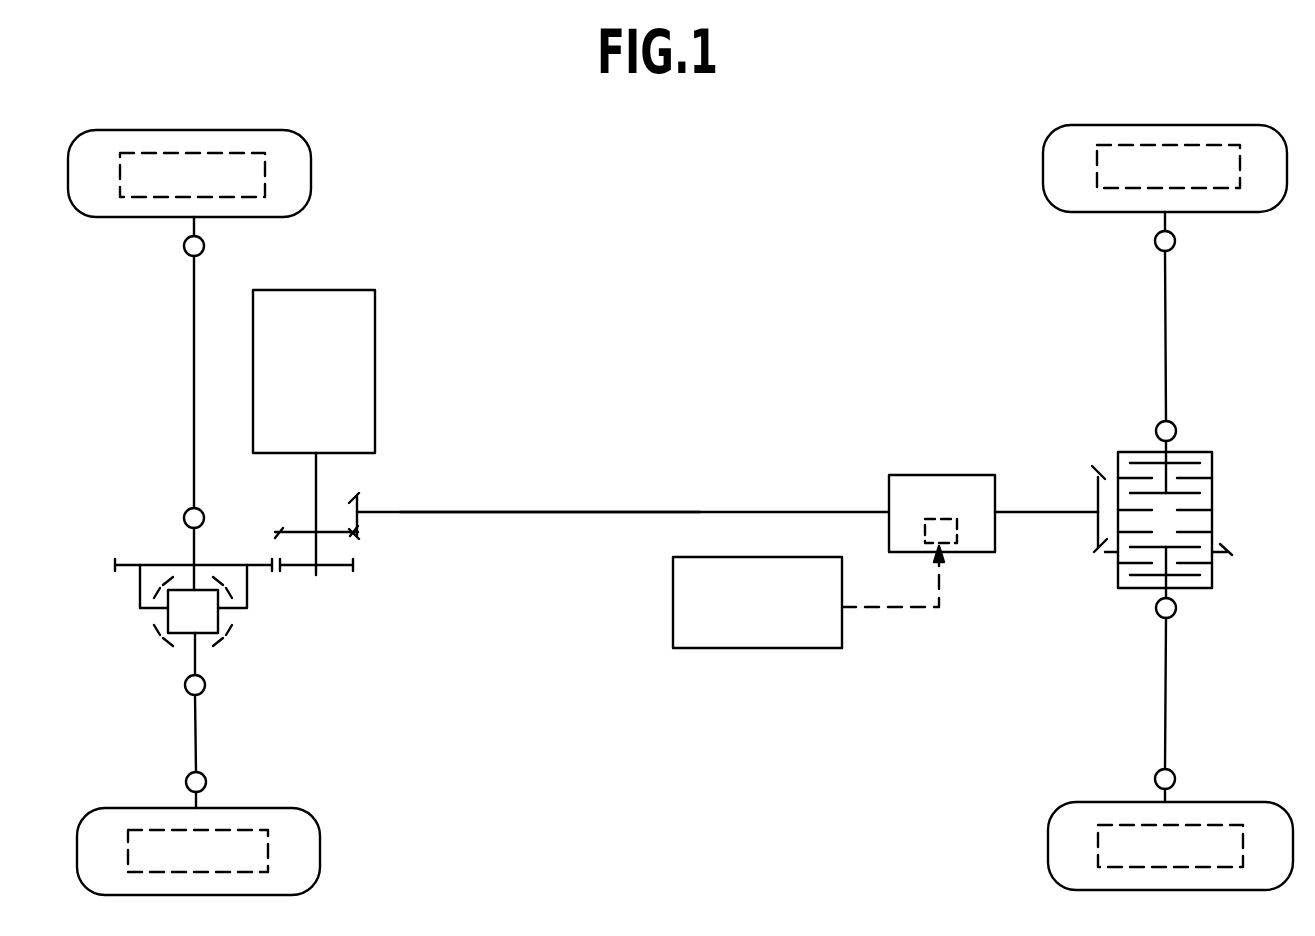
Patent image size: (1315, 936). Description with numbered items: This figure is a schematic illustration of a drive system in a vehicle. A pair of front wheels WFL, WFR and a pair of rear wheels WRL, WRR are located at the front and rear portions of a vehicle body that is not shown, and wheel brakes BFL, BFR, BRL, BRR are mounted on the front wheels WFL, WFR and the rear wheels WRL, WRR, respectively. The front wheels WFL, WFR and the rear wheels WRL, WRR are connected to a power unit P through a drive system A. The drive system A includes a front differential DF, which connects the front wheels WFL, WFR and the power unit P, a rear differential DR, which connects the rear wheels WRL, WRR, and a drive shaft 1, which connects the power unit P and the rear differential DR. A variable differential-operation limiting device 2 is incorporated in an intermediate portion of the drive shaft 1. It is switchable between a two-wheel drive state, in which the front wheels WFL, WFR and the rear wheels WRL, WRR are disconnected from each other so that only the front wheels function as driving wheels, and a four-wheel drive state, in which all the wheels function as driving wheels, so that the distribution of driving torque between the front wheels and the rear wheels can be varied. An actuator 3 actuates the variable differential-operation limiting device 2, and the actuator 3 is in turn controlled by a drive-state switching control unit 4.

The front wheel WFR is at (95, 207).
The front wheel WFL is at (93, 820).
The rear wheel WRR is at (1058, 212).
The rear wheel WRL is at (1068, 812).
The wheel brake BFR is at (265, 180).
The wheel brake BFL is at (233, 828).
The wheel brake BRR is at (1097, 155).
The wheel brake BRL is at (1240, 827).
The power unit P is at (375, 302).
The front differential DF is at (220, 628).
The rear differential DR is at (1212, 462).
The drive system A is at (528, 498).
The drive shaft 1 is at (702, 510).
The variable differential-operation limiting device 2 is at (886, 476).
The actuator 3 is at (962, 543).
The drive-state switching control unit 4 is at (725, 648).